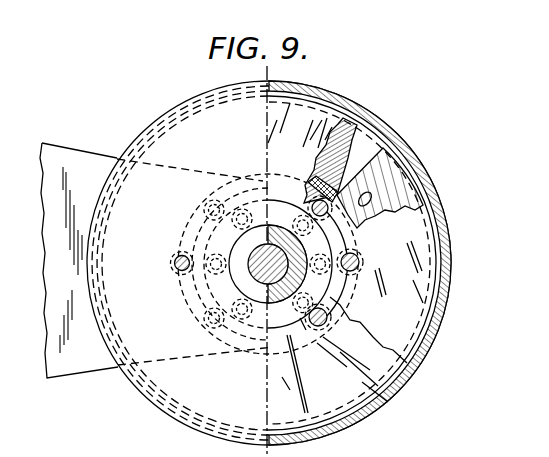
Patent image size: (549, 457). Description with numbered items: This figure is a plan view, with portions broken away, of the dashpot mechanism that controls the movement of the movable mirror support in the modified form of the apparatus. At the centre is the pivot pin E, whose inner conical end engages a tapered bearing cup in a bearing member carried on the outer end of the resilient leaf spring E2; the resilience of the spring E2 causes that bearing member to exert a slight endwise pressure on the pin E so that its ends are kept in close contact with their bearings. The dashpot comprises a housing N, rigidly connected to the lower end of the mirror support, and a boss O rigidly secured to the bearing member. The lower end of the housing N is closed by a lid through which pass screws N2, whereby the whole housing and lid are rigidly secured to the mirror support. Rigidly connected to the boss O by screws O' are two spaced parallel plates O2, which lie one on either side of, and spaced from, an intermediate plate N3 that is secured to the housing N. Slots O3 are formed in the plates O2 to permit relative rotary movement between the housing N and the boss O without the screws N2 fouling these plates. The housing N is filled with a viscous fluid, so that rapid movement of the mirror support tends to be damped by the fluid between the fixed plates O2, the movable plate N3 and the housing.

The housing N is at (177, 108).
The screws N2 is at (378, 250).
The intermediate plate N3 is at (352, 136).
The boss O is at (300, 258).
The screws O' is at (270, 281).
The spaced parallel plates O2 is at (397, 182).
The slots O3 is at (266, 264).
The pivot pin E is at (268, 287).
The resilient leaf spring E2 is at (85, 352).